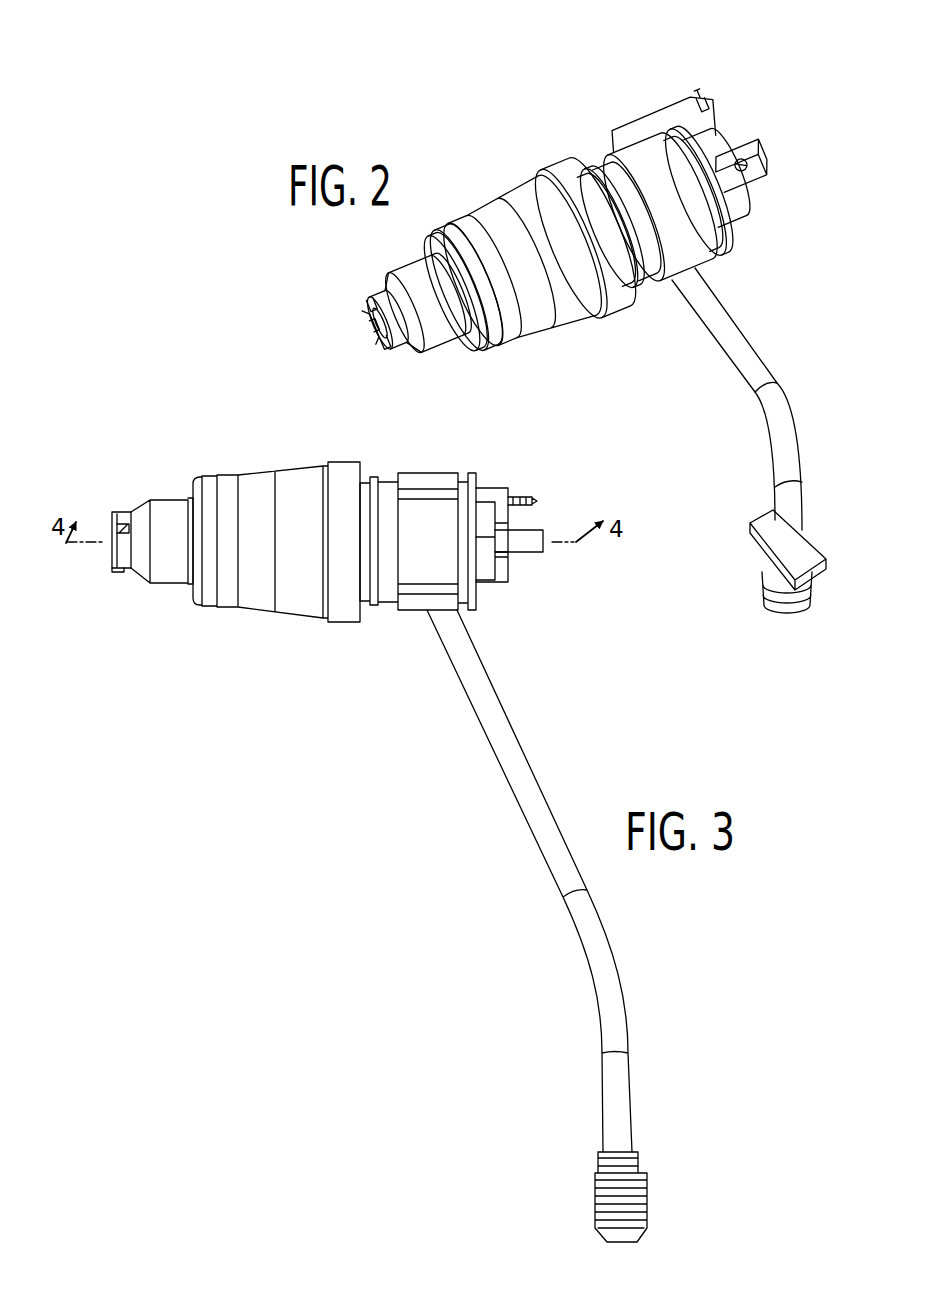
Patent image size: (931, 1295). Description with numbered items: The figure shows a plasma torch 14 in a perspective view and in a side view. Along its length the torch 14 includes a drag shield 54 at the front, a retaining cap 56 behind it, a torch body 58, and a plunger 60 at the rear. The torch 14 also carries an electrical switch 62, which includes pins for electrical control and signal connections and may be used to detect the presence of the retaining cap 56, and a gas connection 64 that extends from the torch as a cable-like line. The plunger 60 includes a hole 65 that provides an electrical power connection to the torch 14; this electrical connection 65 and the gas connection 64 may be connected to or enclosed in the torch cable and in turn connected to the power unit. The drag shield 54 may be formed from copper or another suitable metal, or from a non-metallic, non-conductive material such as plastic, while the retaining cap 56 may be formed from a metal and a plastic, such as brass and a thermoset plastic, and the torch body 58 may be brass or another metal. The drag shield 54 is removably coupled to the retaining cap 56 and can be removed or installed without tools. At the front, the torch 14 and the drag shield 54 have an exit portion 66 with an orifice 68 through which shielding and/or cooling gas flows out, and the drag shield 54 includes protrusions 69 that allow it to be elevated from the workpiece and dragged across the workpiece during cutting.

In FIG. 2, the torch 14 is at (428, 138).
In FIG. 3, the torch 14 is at (365, 673).
In FIG. 2, the drag shield 54 is at (403, 283).
In FIG. 3, the drag shield 54 is at (168, 497).
In FIG. 2, the retaining cap 56 is at (478, 212).
In FIG. 3, the retaining cap 56 is at (254, 470).
In FIG. 2, the torch body 58 is at (652, 153).
In FIG. 3, the torch body 58 is at (421, 523).
In FIG. 2, the plunger 60 is at (762, 158).
In FIG. 3, the plunger 60 is at (543, 552).
In FIG. 2, the electrical switch 62 is at (690, 103).
In FIG. 3, the electrical switch 62 is at (506, 490).
In FIG. 2, the gas connection 64 is at (757, 512).
In FIG. 3, the gas connection 64 is at (520, 742).
In FIG. 2, the hole 65 is at (734, 160).
In FIG. 2, the exit portion 66 is at (356, 296).
In FIG. 3, the exit portion 66 is at (110, 498).
In FIG. 2, the orifice 68 is at (378, 332).
In FIG. 3, the orifice 68 is at (103, 557).
In FIG. 2, the protrusions 69 is at (404, 352).
In FIG. 3, the protrusions 69 is at (121, 573).